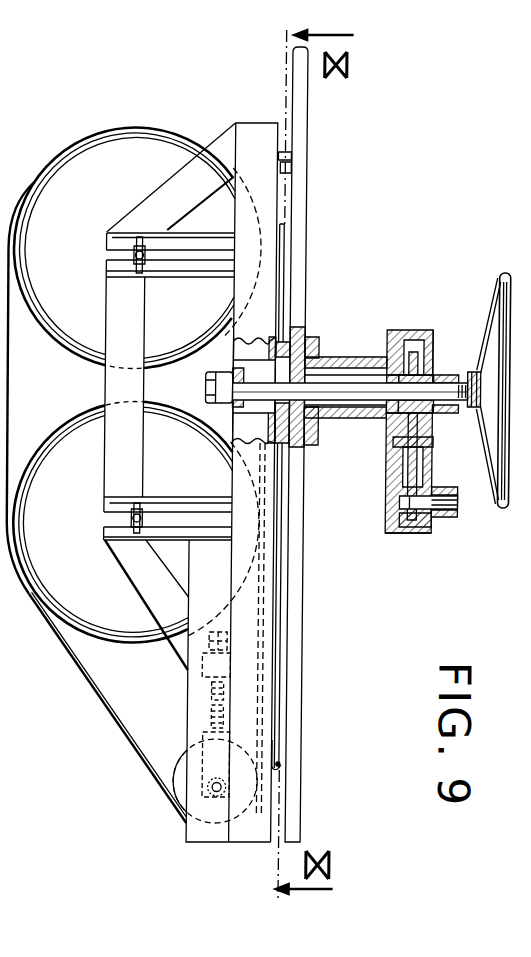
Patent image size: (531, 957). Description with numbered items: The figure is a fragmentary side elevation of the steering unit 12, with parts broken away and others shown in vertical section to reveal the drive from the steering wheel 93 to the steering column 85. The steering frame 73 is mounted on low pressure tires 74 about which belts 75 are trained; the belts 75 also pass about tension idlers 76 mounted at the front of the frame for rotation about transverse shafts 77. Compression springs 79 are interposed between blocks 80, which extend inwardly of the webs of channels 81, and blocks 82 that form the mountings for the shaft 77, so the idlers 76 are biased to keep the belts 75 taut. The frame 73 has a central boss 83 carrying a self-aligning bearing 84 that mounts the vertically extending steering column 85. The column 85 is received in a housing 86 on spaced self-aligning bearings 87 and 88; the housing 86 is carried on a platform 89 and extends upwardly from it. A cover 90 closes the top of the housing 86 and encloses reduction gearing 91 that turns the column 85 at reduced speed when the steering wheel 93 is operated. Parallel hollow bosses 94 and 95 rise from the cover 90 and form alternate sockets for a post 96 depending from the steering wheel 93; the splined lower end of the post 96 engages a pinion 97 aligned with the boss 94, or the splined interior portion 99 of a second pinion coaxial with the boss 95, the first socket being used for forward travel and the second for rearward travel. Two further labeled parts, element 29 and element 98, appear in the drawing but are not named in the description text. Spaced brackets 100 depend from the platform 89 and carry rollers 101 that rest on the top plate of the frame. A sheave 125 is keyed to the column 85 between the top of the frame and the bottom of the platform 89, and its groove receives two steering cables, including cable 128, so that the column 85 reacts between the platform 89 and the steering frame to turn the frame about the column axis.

The steering unit 12 is at (238, 116).
The track end stop 29 is at (279, 768).
The steering frame 73 is at (211, 141).
The low pressure tires 74 is at (123, 385).
The belts 75 is at (98, 502).
The tension idlers 76 is at (182, 762).
The transverse shafts 77 is at (221, 792).
The compression springs 79 is at (193, 679).
The blocks 80 is at (202, 653).
The channels 81 is at (189, 630).
The blocks 82 is at (215, 777).
The central boss 83 is at (268, 468).
The self-aligning bearing 84 is at (238, 343).
The steering column 85 is at (360, 398).
The housing 86 is at (370, 357).
The self-aligning bearing 87 is at (318, 420).
The self-aligning bearing 88 is at (400, 330).
The platform 89 is at (305, 638).
The cover 90 is at (420, 534).
The reduction gearing 91 is at (418, 470).
The steering wheel 93 is at (509, 508).
The hollow boss 94 is at (468, 372).
The hollow boss 95 is at (454, 518).
The post 96 is at (434, 490).
The pinion 97 is at (430, 348).
The retaining nut 98 is at (407, 530).
The splined interior portion 99 is at (458, 509).
The brackets 100 is at (291, 168).
The rollers 101 is at (278, 150).
The sheave 125 is at (275, 418).
The steering cable 128 is at (292, 535).